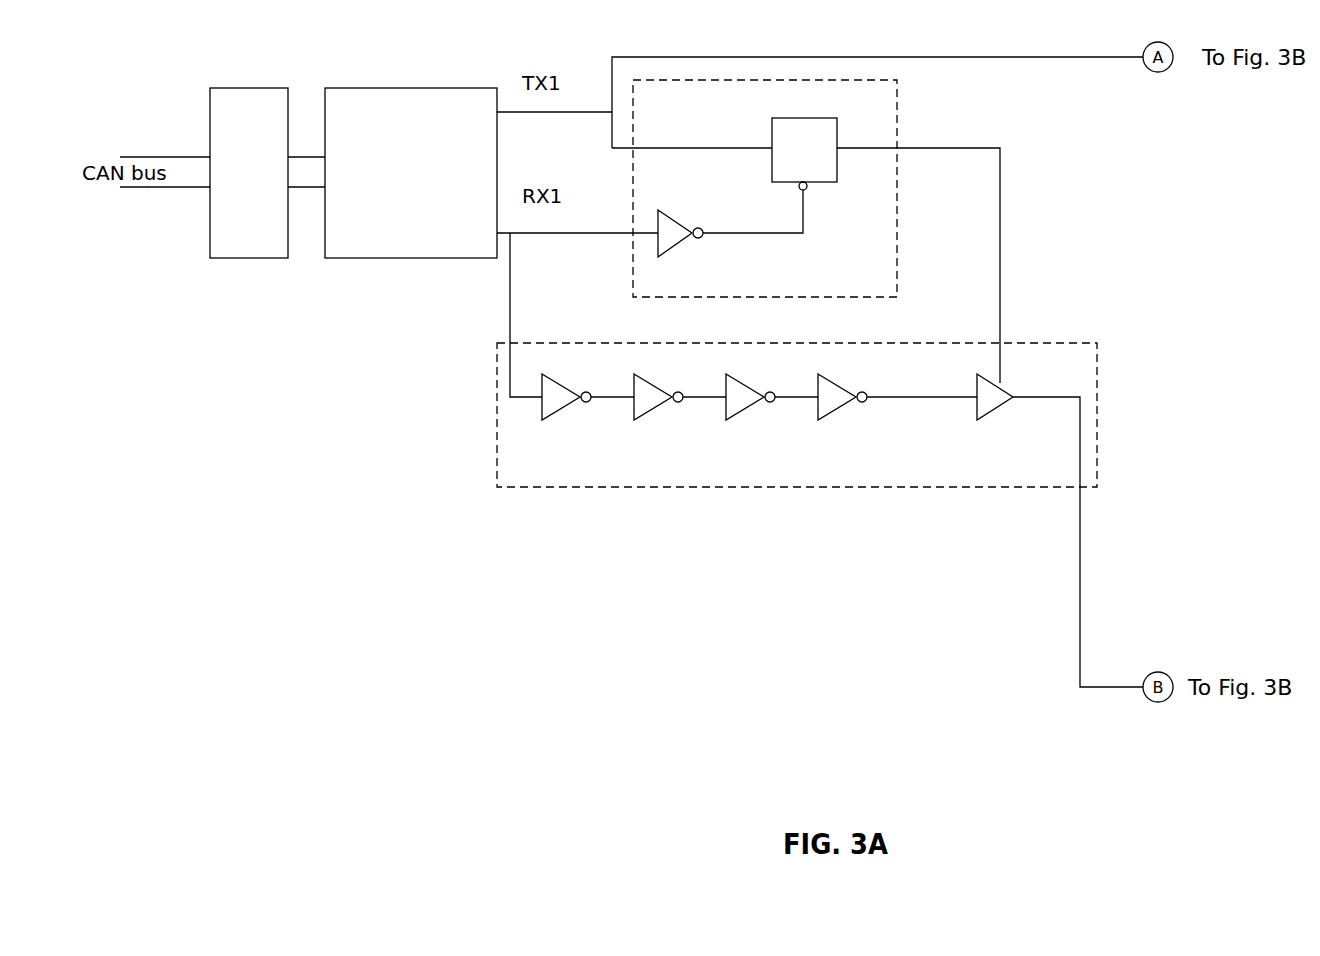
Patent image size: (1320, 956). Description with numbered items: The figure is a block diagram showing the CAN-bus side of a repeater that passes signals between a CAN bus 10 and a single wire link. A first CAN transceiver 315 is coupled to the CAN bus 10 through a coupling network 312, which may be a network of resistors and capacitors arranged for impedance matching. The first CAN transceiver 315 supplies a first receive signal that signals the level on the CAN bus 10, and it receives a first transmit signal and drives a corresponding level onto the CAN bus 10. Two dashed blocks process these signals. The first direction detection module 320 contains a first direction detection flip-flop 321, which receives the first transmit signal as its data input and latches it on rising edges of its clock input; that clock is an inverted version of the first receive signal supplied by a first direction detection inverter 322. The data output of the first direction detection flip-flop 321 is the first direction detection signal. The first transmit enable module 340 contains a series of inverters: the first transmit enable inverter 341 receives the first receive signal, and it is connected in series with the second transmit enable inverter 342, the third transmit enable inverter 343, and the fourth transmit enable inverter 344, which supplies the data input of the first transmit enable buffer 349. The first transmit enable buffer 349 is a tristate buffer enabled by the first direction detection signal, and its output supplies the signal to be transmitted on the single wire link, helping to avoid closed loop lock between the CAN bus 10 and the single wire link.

The CAN bus 10 is at (133, 207).
The coupling network 312 is at (227, 258).
The first CAN transceiver 315 is at (357, 258).
The first direction detection module 320 is at (801, 188).
The first direction detection flip-flop 321 is at (803, 118).
The first direction detection inverter 322 is at (680, 244).
The first transmit enable module 340 is at (797, 438).
The first transmit enable inverter 341 is at (565, 407).
The second transmit enable inverter 342 is at (657, 407).
The third transmit enable inverter 343 is at (749, 407).
The fourth transmit enable inverter 344 is at (841, 407).
The first transmit enable buffer 349 is at (997, 408).